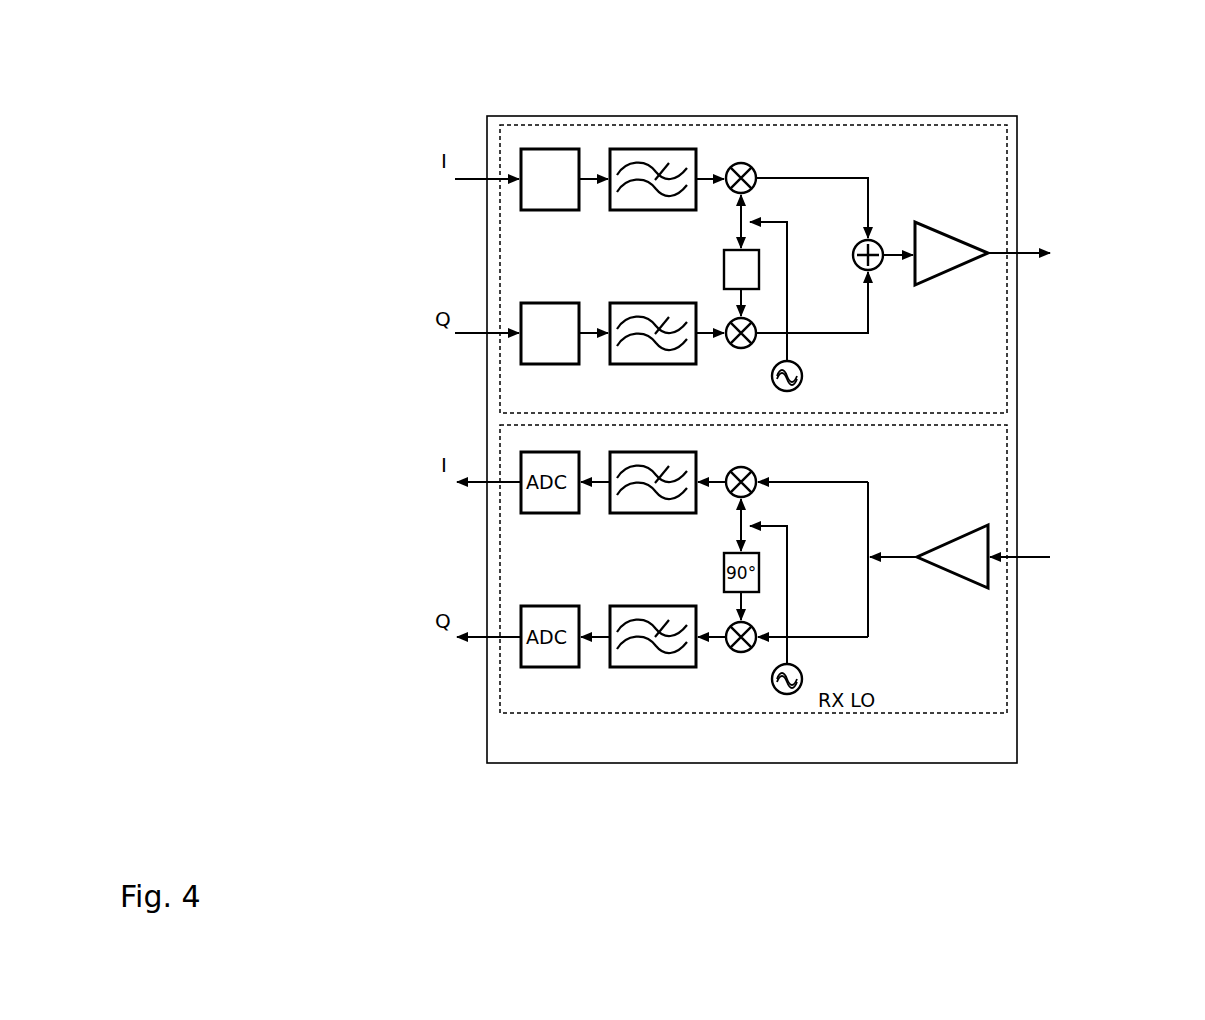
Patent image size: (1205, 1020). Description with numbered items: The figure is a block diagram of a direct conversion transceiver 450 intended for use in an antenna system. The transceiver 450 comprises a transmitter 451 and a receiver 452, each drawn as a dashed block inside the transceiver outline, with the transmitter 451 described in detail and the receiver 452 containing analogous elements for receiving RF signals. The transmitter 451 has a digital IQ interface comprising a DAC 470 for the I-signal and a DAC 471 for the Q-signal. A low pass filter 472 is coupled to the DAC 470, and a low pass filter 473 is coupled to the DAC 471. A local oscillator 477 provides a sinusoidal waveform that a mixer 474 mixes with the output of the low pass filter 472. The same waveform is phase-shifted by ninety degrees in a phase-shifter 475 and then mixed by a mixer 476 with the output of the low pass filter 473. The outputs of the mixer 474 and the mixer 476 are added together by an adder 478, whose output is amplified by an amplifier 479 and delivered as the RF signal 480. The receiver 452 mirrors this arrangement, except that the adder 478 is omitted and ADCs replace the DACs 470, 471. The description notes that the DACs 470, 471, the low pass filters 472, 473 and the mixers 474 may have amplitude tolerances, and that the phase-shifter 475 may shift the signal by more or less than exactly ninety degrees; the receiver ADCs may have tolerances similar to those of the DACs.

The transceiver 450 is at (318, 782).
The transmitter 451 is at (1005, 368).
The receiver 452 is at (1005, 685).
The DAC 470 is at (543, 149).
The DAC 471 is at (522, 355).
The low pass filter 472 is at (645, 149).
The low pass filter 473 is at (686, 358).
The mixer 474 is at (741, 162).
The phase-shifter 475 is at (725, 265).
The mixer 476 is at (740, 349).
The local oscillator 477 is at (800, 363).
The adder 478 is at (876, 240).
The amplifier 479 is at (942, 240).
The RF signal 480 is at (1030, 243).